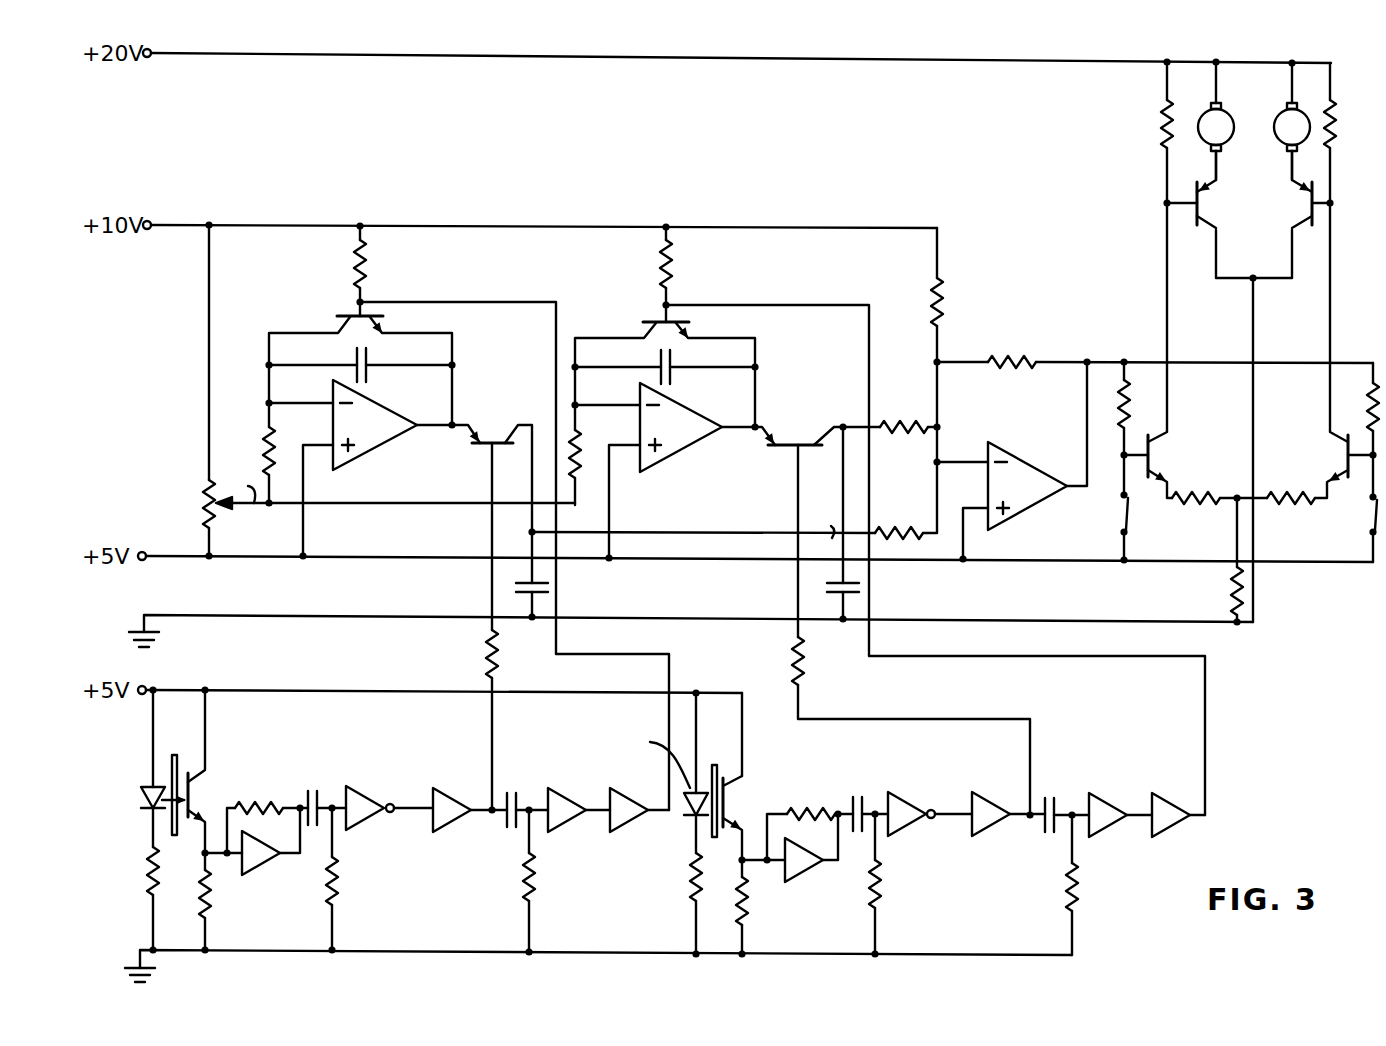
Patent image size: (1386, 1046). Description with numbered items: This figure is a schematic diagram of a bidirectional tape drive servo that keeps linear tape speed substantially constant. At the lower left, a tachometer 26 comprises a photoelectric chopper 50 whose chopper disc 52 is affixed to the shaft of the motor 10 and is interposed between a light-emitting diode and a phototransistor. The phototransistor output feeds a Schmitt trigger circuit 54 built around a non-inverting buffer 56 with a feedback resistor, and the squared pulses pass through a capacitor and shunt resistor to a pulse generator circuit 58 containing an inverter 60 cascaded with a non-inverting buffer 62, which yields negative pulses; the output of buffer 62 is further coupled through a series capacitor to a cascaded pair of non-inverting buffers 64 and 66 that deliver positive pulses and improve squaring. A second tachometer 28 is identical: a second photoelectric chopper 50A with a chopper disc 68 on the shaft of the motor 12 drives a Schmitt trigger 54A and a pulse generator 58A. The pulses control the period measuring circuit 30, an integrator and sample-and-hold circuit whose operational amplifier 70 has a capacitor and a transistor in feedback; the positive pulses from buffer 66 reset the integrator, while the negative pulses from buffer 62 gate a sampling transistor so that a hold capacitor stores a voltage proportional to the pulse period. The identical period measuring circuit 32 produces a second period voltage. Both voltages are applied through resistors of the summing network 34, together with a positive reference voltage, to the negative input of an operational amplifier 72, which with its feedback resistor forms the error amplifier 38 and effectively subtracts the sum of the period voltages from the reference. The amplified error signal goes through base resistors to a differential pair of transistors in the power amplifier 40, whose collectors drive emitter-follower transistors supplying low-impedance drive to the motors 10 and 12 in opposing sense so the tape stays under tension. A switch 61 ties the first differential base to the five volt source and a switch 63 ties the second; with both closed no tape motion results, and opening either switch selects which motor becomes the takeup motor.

The motor 10 is at (1233, 121).
The motor 12 is at (1278, 143).
The tachometer 26 is at (260, 959).
The second tachometer 28 is at (718, 959).
The period measuring circuit 30 is at (380, 198).
The period measuring circuit 32 is at (690, 211).
The summing network 34 is at (900, 211).
The error amplifier 38 is at (1039, 248).
The power amplifier 40 is at (1345, 331).
The photoelectric chopper 50 is at (167, 820).
The second photoelectric chopper 50A is at (707, 823).
The chopper disc 52 is at (176, 757).
The Schmitt trigger circuit 54 is at (294, 778).
The Schmitt trigger 54A is at (828, 800).
The non-inverting buffer 56 is at (258, 869).
The pulse generator circuit 58 is at (499, 853).
The pulse generator 58A is at (1038, 856).
The inverter 60 is at (388, 796).
The switch 61 is at (1120, 512).
The non-inverting buffer 62 is at (454, 793).
The switch 63 is at (1370, 515).
The non-inverting buffer 64 is at (564, 793).
The non-inverting buffer 66 is at (628, 794).
The chopper disc 68 is at (717, 764).
The operational amplifier 70 is at (376, 443).
The operational amplifier 72 is at (1045, 505).